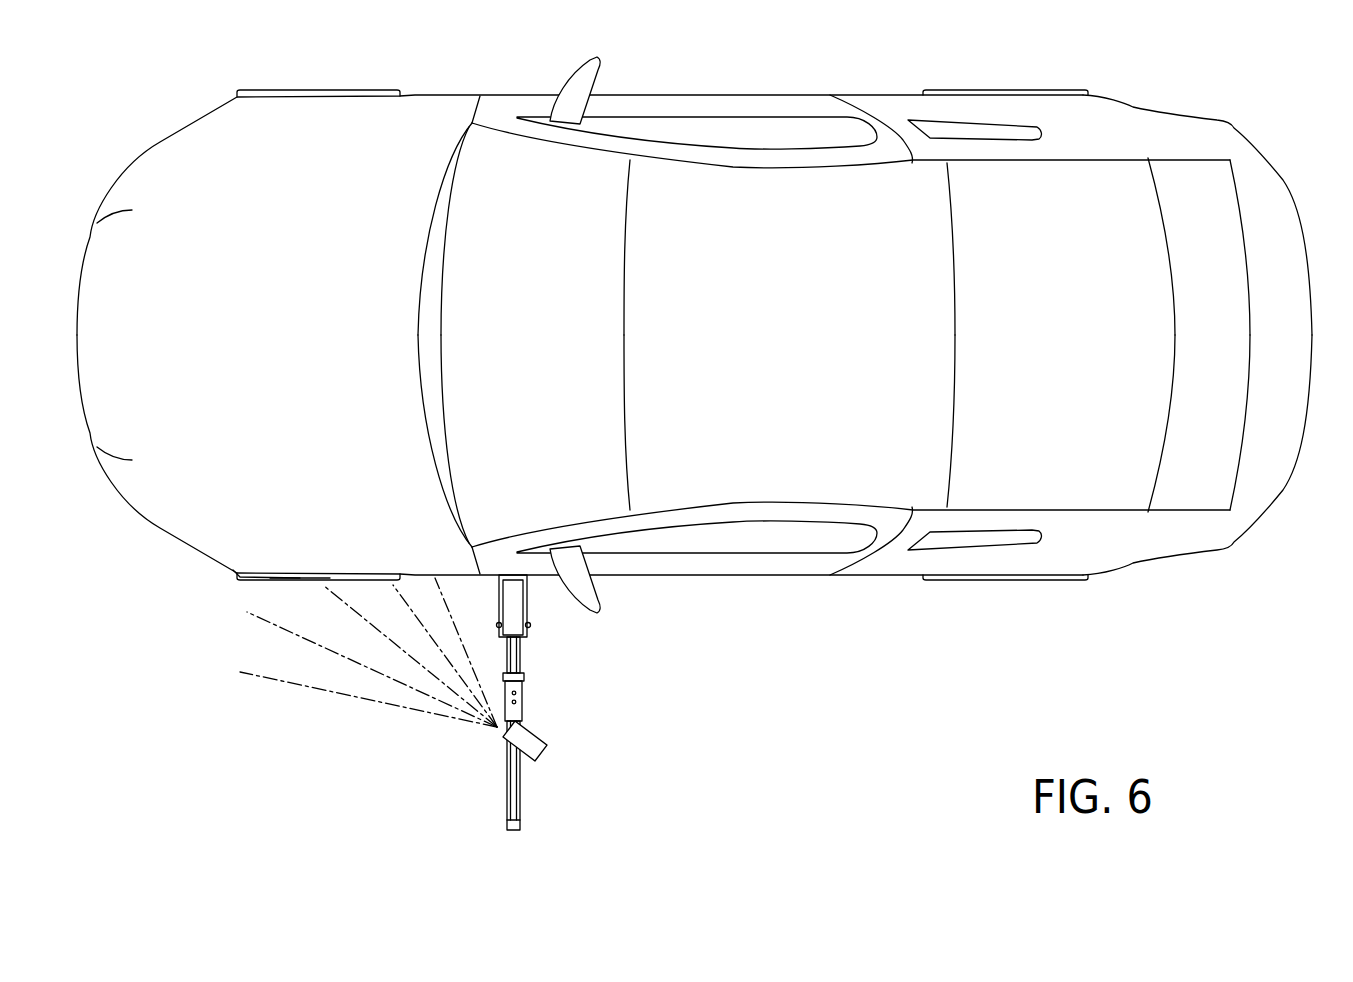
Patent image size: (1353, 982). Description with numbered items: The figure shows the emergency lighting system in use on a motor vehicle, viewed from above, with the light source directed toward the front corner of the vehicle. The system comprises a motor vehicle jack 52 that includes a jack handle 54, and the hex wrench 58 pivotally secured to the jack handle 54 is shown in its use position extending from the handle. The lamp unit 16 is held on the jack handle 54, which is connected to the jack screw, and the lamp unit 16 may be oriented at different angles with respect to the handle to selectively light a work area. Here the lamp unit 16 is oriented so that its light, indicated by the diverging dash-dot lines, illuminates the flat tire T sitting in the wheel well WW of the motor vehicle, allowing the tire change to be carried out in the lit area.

The lamp unit 16 is at (542, 748).
The motor vehicle jack 52 is at (525, 611).
The hex wrench 58 is at (520, 657).
The jack handle 54 is at (510, 777).
The flat tire T is at (239, 577).
The wheel well WW is at (292, 592).